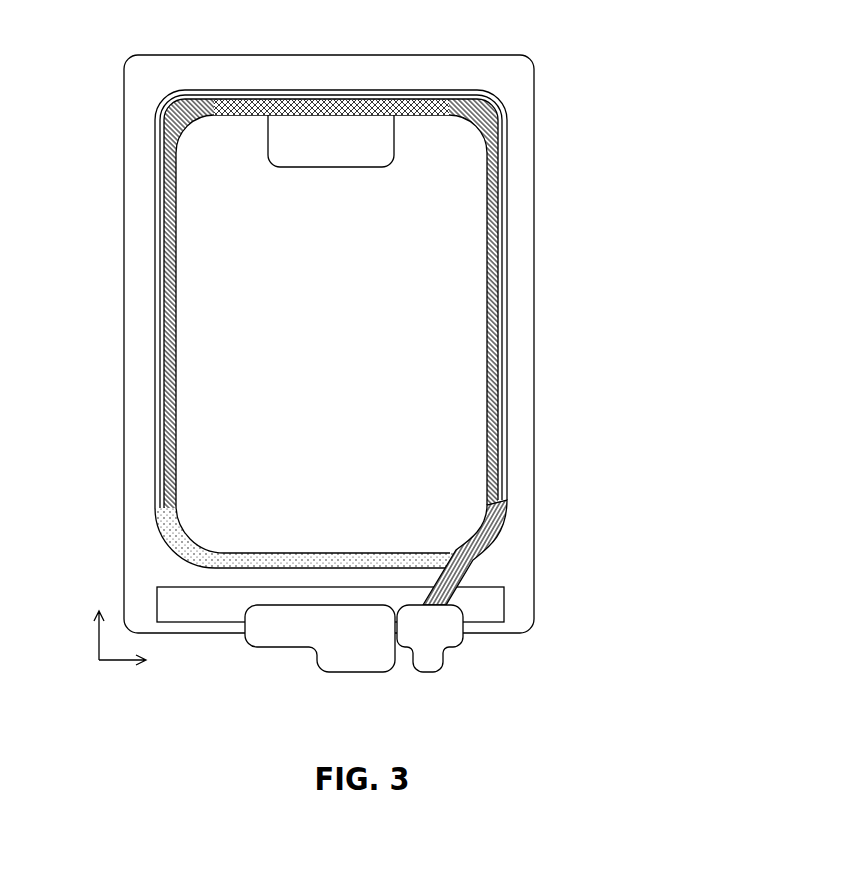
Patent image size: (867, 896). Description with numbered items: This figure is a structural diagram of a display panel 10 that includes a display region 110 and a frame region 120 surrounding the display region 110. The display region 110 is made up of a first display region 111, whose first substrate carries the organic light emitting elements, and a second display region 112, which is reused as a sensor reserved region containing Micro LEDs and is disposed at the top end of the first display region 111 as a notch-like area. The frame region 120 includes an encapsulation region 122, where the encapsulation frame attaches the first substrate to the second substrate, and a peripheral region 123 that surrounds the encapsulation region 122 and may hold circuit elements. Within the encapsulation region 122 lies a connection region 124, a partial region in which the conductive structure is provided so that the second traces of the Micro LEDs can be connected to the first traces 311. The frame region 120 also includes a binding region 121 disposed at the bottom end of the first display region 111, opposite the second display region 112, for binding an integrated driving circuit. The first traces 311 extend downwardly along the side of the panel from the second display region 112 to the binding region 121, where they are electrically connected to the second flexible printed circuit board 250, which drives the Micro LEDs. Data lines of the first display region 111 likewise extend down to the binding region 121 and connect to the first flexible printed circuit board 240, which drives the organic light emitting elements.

The display panel 10 is at (173, 37).
The display region 110 is at (608, 132).
The first display region 111 is at (455, 190).
The second display region 112 is at (368, 137).
The frame region 120 is at (610, 608).
The binding region 121 is at (497, 607).
The encapsulation region 122 is at (507, 292).
The peripheral region 123 is at (518, 243).
The connection region 124 is at (355, 112).
The first traces 311 is at (493, 90).
The first flexible printed circuit board 240 is at (362, 672).
The second flexible printed circuit board 250 is at (430, 672).